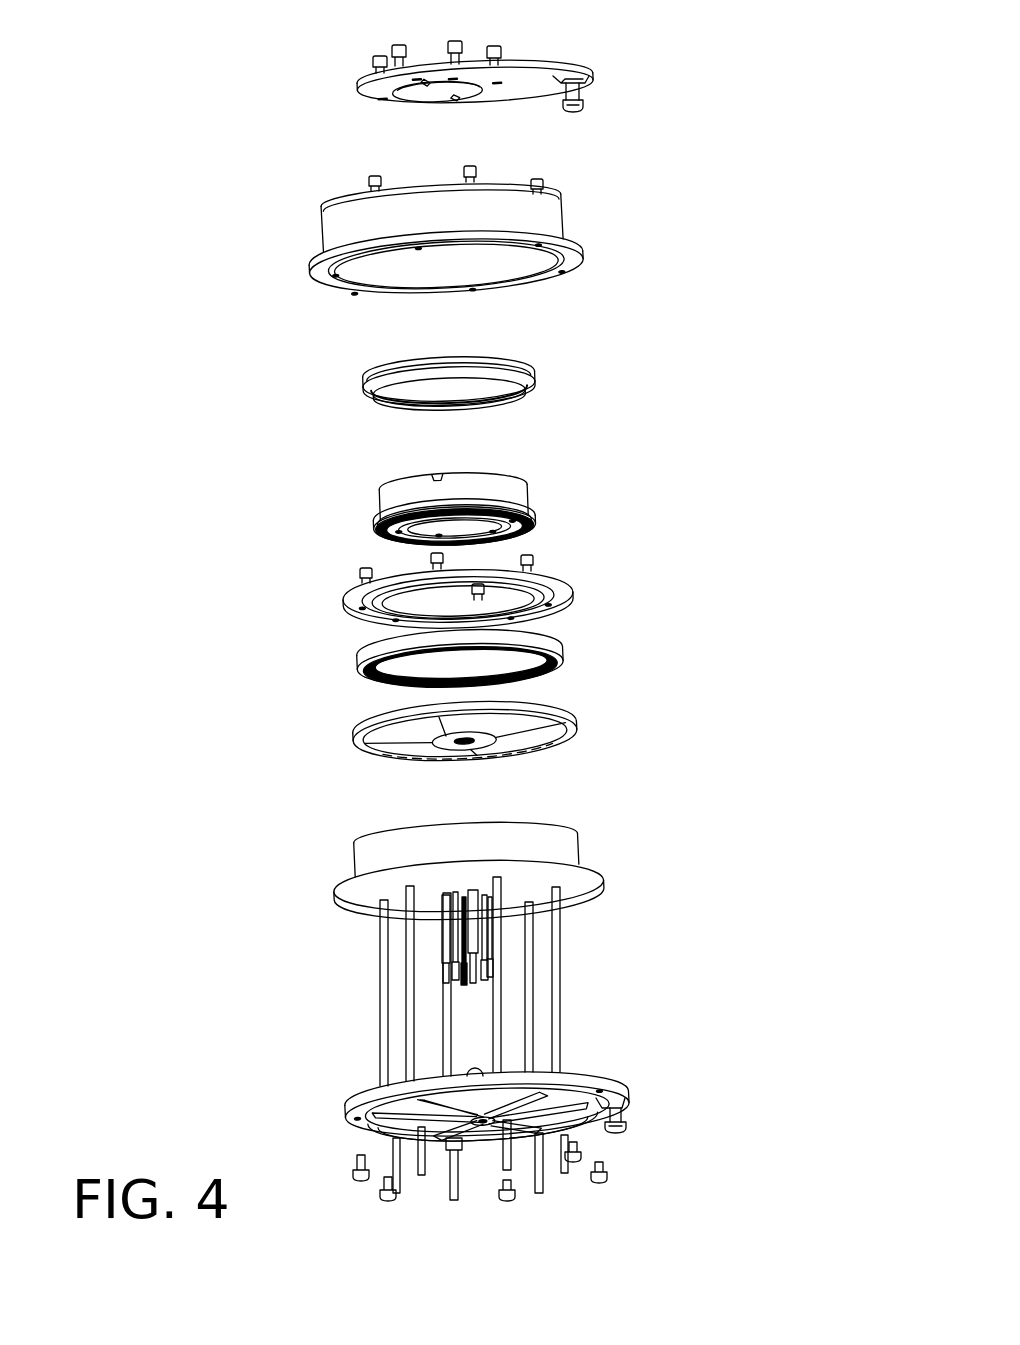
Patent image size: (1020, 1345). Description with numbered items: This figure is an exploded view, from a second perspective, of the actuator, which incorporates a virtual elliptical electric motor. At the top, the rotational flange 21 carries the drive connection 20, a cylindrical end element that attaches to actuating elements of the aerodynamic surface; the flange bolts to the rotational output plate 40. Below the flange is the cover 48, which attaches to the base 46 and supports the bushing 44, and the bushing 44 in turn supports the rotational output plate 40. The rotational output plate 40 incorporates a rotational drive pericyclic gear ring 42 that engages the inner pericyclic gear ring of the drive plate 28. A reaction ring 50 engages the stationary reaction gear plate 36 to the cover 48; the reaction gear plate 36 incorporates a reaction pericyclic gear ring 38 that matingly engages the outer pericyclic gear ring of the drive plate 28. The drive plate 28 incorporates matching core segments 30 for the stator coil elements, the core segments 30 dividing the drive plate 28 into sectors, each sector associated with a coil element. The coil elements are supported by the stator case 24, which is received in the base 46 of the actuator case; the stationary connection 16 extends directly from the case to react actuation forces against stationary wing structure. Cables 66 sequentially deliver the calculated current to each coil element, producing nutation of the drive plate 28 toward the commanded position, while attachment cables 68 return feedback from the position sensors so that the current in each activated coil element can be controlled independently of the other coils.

The rotational flange 21 is at (543, 55).
The drive connection 20 is at (584, 95).
The cover 48 is at (553, 215).
The bushing 44 is at (538, 376).
The rotational output plate 40 is at (527, 500).
The rotational drive pericyclic gear ring 42 is at (531, 530).
The reaction ring 50 is at (558, 582).
The reaction gear plate 36 is at (523, 643).
The reaction pericyclic gear ring 38 is at (558, 660).
The drive plate 28 is at (517, 737).
The core segments 30 is at (518, 745).
The stator case 24 is at (568, 846).
The cables 66 is at (555, 965).
The attachment cables 68 is at (447, 963).
The base 46 is at (587, 1078).
The stationary connection 16 is at (624, 1120).